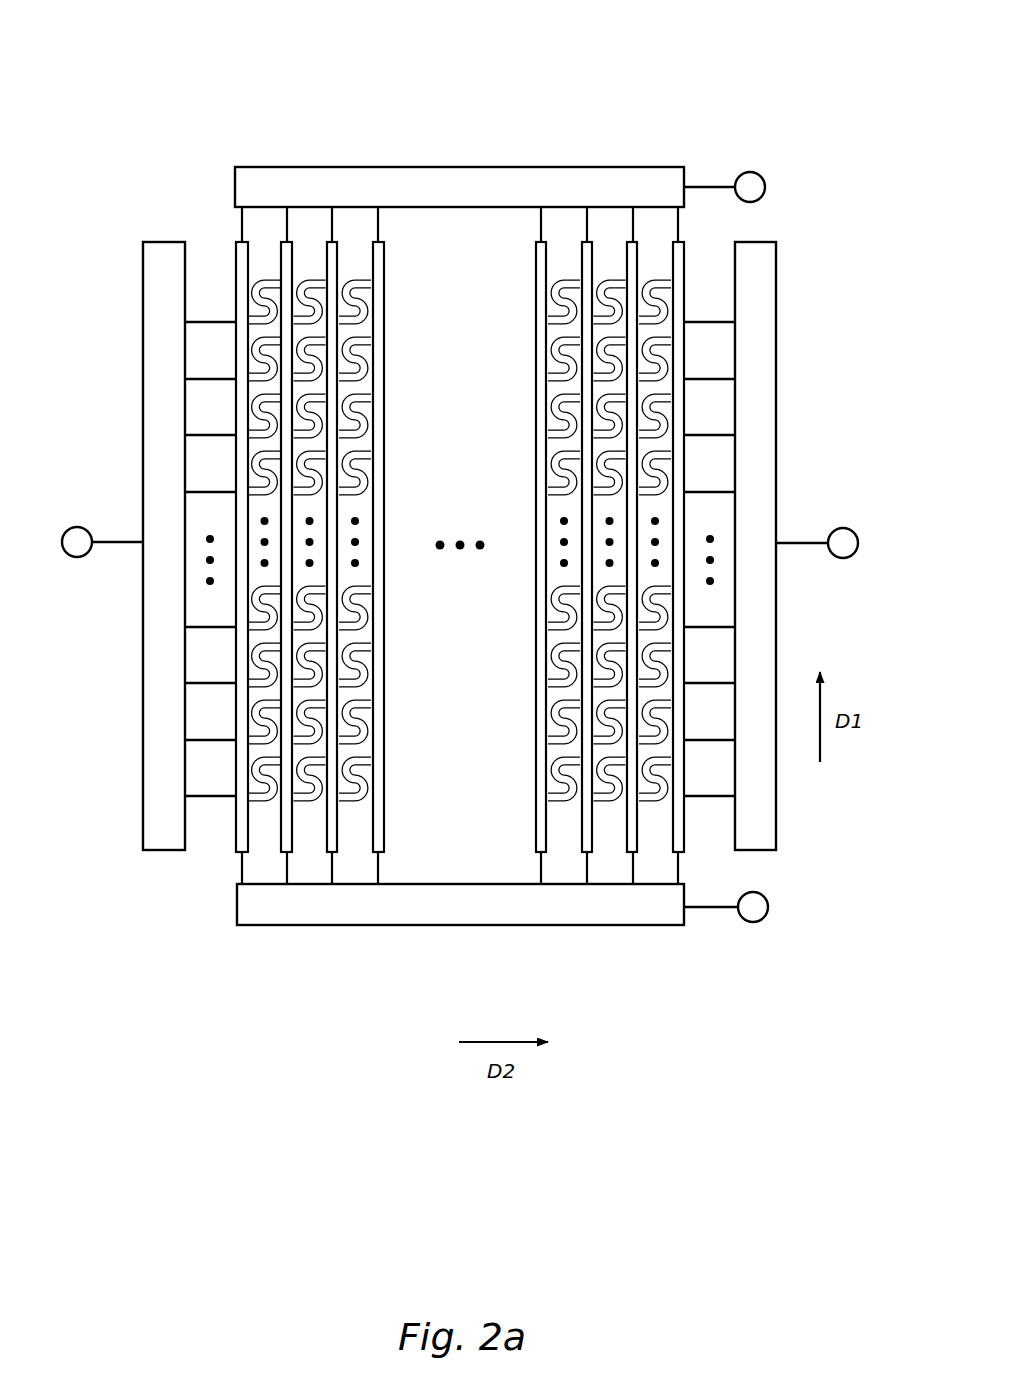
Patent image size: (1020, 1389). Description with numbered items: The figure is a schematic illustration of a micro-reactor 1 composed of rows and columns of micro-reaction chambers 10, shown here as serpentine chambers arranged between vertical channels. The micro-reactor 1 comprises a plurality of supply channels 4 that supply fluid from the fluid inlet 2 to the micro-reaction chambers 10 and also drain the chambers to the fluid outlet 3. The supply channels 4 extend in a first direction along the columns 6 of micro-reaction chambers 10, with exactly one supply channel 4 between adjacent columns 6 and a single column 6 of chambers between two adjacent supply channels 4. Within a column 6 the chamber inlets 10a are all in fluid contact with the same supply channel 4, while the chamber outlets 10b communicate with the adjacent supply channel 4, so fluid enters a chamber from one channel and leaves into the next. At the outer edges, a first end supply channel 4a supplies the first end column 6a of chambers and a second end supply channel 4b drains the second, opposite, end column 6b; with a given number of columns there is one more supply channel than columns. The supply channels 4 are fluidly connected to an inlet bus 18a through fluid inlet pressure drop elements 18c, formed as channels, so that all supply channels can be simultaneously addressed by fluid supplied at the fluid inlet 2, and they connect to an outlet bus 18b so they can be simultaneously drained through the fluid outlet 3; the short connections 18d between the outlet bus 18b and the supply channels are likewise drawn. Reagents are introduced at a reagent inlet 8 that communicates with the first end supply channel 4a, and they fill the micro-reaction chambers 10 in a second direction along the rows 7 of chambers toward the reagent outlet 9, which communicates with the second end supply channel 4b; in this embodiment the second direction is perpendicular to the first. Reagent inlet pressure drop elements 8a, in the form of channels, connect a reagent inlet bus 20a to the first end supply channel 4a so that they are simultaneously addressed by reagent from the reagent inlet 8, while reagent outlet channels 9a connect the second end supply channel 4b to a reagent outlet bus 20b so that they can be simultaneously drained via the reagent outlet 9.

The micro-reactor 1 is at (178, 64).
The fluid inlet 2 is at (768, 910).
The fluid outlet 3 is at (765, 189).
The supply channels 4 is at (536, 773).
The first end supply channel 4a is at (240, 848).
The second end supply channel 4b is at (680, 848).
The columns 6 is at (262, 268).
The first end column 6a is at (265, 816).
The second end column 6b is at (654, 816).
The rows 7 is at (222, 301).
The reagent inlet 8 is at (62, 543).
The reagent inlet pressure drop elements 8a is at (205, 800).
The reagent outlet 9 is at (858, 545).
The reagent outlet channels 9a is at (717, 800).
The micro-reaction chambers 10 is at (658, 355).
The chamber inlets 10a is at (545, 320).
The chamber outlets 10b is at (580, 283).
The inlet bus 18a is at (390, 925).
The outlet bus 18b is at (490, 167).
The fluid inlet pressure drop elements 18c is at (540, 884).
The top bar connection 18d is at (588, 240).
The reagent inlet bus 20a is at (150, 713).
The reagent outlet bus 20b is at (765, 440).